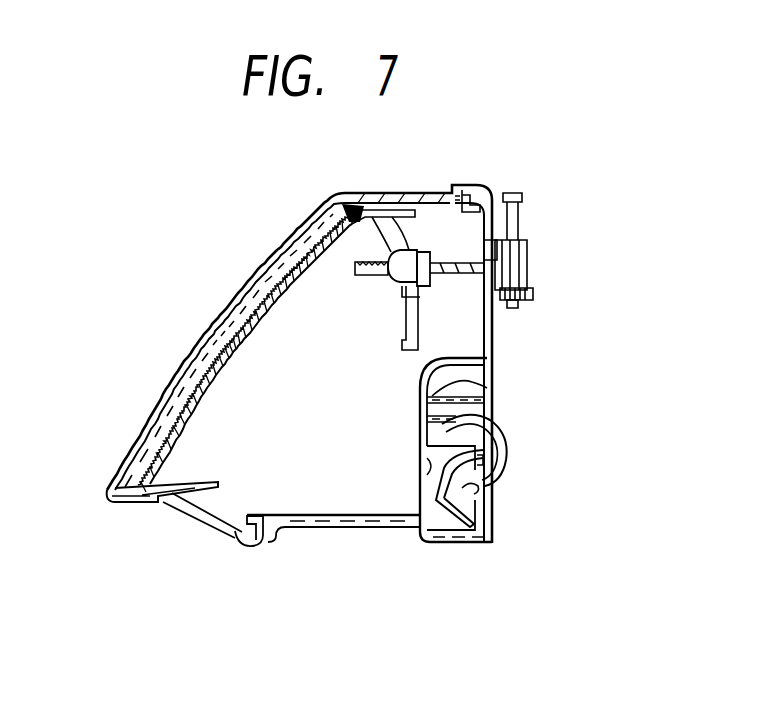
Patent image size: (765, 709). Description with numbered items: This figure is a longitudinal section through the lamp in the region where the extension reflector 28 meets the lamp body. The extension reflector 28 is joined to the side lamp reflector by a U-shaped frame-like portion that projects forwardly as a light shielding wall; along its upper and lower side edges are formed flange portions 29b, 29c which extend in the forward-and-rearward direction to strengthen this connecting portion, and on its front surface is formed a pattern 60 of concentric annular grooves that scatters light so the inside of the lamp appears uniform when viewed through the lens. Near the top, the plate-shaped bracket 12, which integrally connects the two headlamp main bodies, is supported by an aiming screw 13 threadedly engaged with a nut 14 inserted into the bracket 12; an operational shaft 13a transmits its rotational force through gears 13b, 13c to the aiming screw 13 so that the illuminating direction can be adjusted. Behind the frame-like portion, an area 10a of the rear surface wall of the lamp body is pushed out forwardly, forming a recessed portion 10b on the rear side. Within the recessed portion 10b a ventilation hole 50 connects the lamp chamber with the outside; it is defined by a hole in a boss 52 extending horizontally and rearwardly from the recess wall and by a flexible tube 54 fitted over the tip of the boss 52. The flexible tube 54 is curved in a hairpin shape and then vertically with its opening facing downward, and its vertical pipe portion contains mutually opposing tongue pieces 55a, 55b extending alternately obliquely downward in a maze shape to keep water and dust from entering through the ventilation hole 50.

The extension reflector 28 is at (192, 404).
The pattern 60 is at (254, 314).
The flange portion 29b is at (418, 192).
The flange portion 29c is at (203, 482).
The aiming screw 13 is at (358, 194).
The nut 14 is at (414, 252).
The plate-shaped bracket 12 is at (406, 320).
The operational shaft 13a is at (513, 214).
The gear 13b is at (530, 295).
The gear 13c is at (497, 302).
The area 10a is at (422, 380).
The recessed portion 10b is at (420, 486).
The boss 52 is at (489, 391).
The ventilation hole 50 is at (497, 431).
The tongue piece 55a is at (502, 448).
The flexible tube 54 is at (500, 472).
The tongue piece 55b is at (490, 507).